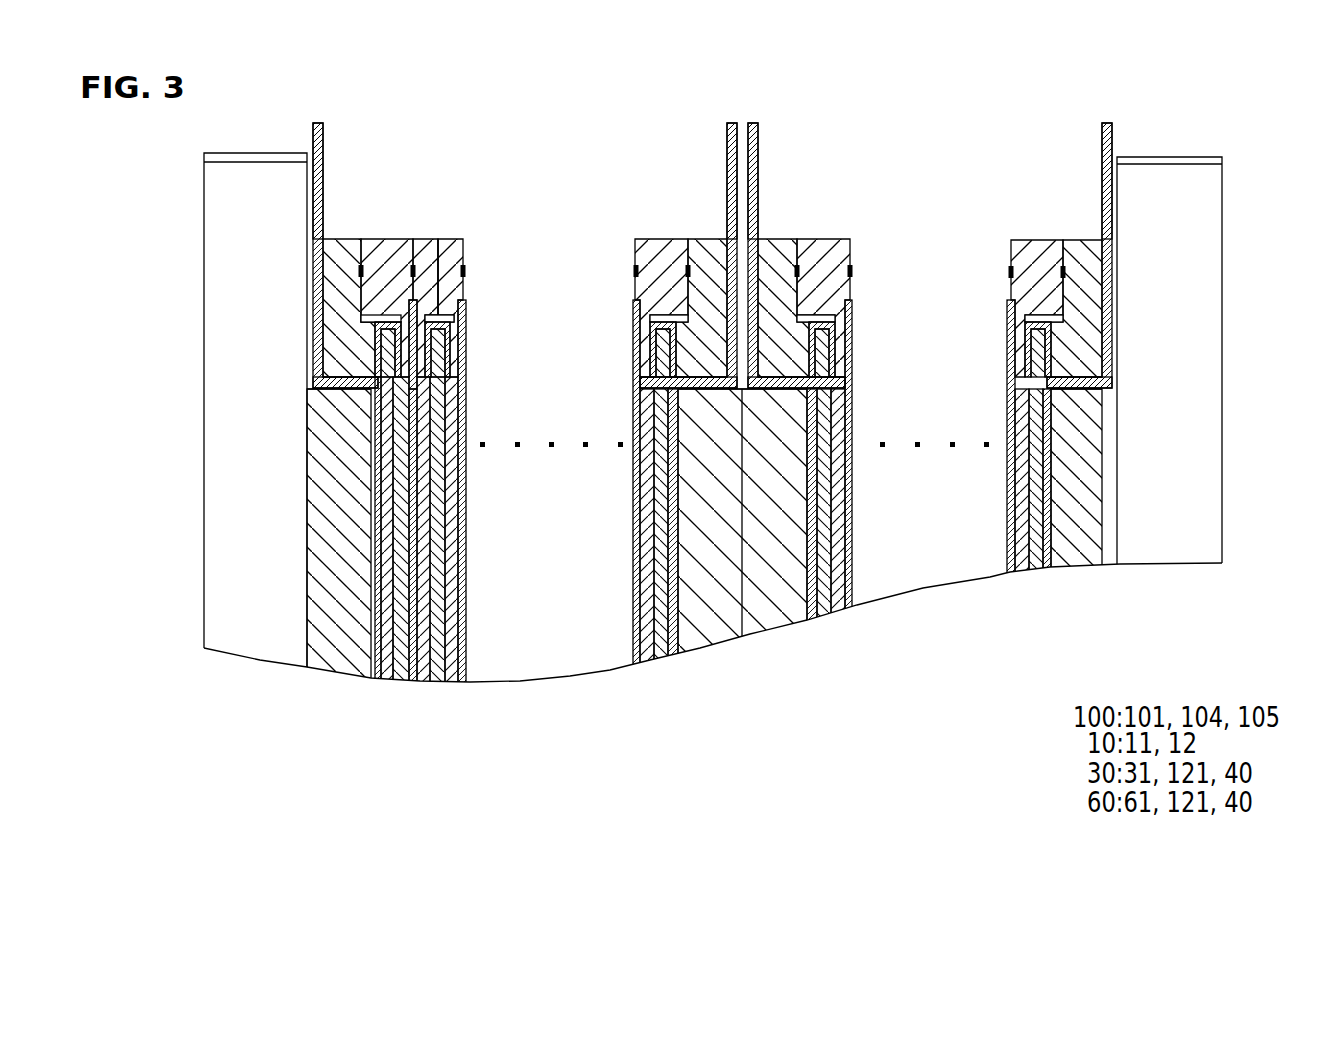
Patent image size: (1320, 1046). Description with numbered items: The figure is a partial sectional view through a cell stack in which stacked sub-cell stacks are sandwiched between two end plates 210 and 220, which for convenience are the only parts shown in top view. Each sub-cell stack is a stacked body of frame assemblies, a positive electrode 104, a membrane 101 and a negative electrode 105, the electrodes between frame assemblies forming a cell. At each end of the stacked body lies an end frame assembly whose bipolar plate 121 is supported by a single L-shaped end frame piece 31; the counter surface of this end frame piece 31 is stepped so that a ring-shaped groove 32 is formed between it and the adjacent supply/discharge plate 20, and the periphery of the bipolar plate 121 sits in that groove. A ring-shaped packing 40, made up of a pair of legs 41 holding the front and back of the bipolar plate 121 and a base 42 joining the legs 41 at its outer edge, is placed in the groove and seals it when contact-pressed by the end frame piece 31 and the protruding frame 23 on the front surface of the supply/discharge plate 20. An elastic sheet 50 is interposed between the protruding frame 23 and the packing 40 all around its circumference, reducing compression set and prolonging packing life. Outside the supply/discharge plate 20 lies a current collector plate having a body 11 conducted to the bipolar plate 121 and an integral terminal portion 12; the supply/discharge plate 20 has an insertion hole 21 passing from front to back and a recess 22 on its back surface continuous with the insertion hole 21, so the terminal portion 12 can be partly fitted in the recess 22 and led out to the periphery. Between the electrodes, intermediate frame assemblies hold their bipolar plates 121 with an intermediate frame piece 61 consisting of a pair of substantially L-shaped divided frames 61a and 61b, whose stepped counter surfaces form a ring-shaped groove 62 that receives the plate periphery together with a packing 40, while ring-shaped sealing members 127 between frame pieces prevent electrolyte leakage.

The body 11 is at (371, 590).
The terminal portion 12 is at (323, 133).
The supply/discharge plate 20 is at (345, 262).
The insertion hole 21 is at (347, 395).
The recess 22 is at (310, 277).
The protruding frame 23 is at (365, 239).
The end frame piece 31 is at (384, 240).
The ring-shaped groove 32 is at (413, 240).
The packing 40 is at (580, 325).
The legs 41 is at (377, 355).
The base 42 is at (362, 320).
The elastic sheet 50 is at (345, 383).
The intermediate frame piece 61 is at (459, 239).
The divided frame 61a is at (421, 240).
The divided frame 61b is at (455, 240).
The ring-shaped groove 62 is at (447, 262).
The membrane 101 is at (410, 690).
The positive electrode 104 is at (398, 682).
The negative electrode 105 is at (413, 682).
The bipolar plate 121 is at (383, 682).
The sealing member 127 is at (465, 271).
The end plate 210 is at (1220, 480).
The end plate 220 is at (223, 631).